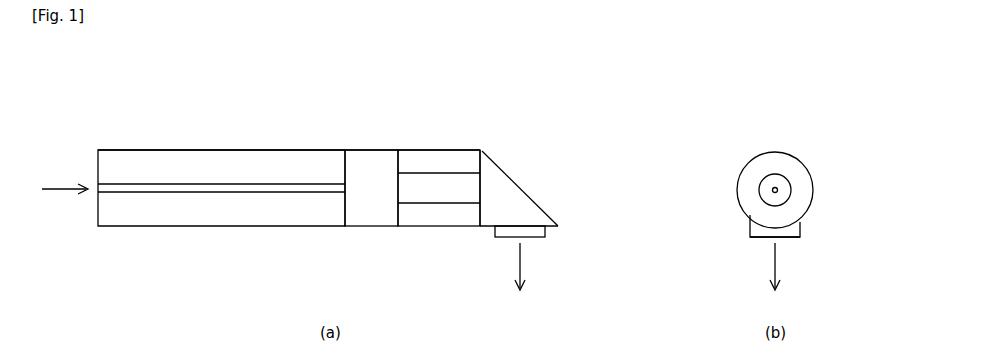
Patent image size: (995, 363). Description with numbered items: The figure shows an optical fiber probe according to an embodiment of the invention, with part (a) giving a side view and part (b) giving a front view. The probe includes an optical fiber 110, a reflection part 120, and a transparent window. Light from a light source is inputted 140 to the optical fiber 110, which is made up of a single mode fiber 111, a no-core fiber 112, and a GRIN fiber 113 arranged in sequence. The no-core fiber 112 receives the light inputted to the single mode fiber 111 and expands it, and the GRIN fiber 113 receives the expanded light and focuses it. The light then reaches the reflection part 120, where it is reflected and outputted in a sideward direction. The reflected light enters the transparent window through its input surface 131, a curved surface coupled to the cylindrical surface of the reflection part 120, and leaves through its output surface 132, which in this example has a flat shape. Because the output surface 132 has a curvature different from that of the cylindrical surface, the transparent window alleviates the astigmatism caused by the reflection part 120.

The optical fiber 110 is at (457, 102).
The single mode fiber 111 is at (318, 149).
The no-core fiber 112 is at (372, 149).
The GRIN fiber 113 is at (427, 149).
The reflection part 120 is at (484, 149).
The input surface 131 is at (757, 214).
The output surface 132 is at (796, 238).
The inputted light 140 is at (60, 190).